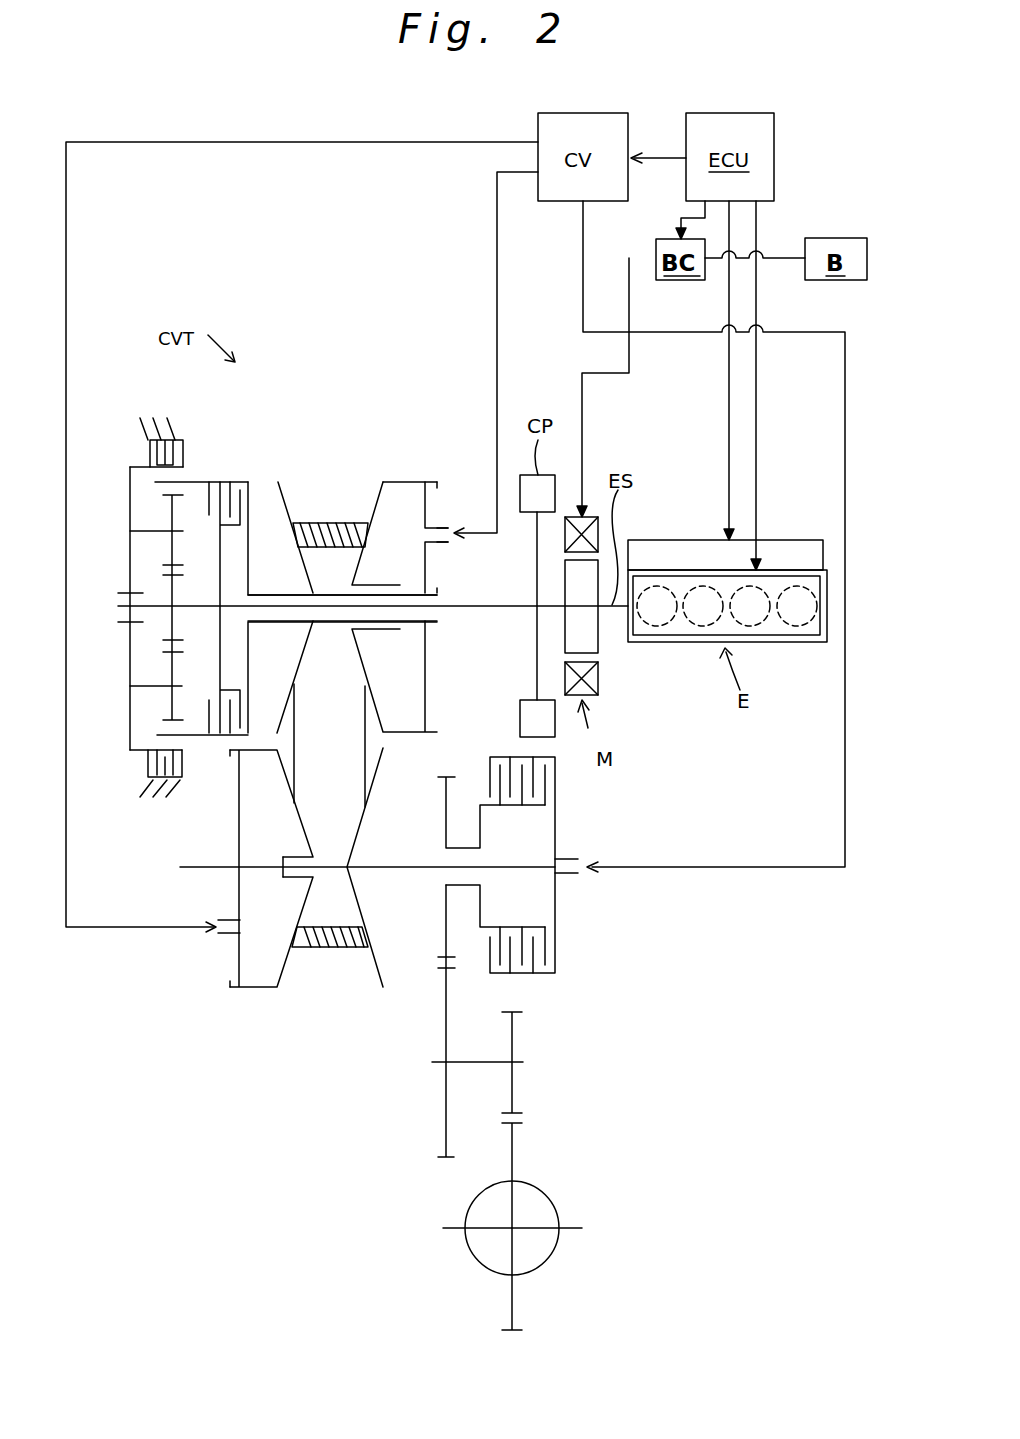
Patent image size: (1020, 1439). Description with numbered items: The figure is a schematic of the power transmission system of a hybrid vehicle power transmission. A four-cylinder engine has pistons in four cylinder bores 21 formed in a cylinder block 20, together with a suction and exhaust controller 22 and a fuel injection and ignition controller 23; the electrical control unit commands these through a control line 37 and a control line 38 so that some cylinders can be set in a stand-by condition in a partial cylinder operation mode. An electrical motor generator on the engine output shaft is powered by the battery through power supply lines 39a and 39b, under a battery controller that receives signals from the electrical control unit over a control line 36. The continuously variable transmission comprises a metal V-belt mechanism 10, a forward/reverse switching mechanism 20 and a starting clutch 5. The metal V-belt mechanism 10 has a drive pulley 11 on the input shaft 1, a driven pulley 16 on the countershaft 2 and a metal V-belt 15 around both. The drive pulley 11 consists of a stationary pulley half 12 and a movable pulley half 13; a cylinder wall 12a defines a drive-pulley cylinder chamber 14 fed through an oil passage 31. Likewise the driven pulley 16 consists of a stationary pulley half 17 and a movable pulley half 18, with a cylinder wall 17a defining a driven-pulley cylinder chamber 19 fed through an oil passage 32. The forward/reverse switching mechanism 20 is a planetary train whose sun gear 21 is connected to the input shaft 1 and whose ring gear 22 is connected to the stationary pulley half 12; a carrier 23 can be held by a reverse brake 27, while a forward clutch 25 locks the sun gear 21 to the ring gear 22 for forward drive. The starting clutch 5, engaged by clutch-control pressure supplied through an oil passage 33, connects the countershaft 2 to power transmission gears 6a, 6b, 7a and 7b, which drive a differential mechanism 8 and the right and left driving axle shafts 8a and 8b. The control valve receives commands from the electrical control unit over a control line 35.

The input shaft 1 is at (493, 612).
The countershaft 2 is at (410, 870).
The starting clutch 5 is at (568, 950).
The power transmission gear 6a is at (446, 812).
The power transmission gear 6b is at (446, 1157).
The power transmission gear 7a is at (512, 1037).
The power transmission gear 7b is at (512, 1153).
The differential mechanism 8 is at (473, 1258).
The driving axle shaft 8a is at (450, 1228).
The driving axle shaft 8b is at (570, 1223).
The metal V-belt mechanism 10 is at (385, 424).
The drive pulley 11 is at (409, 477).
The stationary pulley half 12 is at (293, 494).
The cylinder wall 12a is at (425, 566).
The movable pulley half 13 is at (377, 492).
The drive-pulley cylinder chamber 14 is at (403, 548).
The metal V-belt 15 is at (367, 733).
The driven pulley 16 is at (292, 990).
The stationary pulley half 17 is at (383, 970).
The cylinder wall 17a is at (240, 830).
The movable pulley half 18 is at (283, 967).
The driven-pulley cylinder chamber 19 is at (285, 851).
The forward/reverse switching mechanism 20 is at (129, 407).
The sun gear 21 is at (172, 595).
The ring gear 22 is at (157, 733).
The carrier 23 is at (130, 503).
The forward clutch 25 is at (230, 482).
The reverse brake 27 is at (150, 452).
The oil passage 31 is at (498, 262).
The oil passage 32 is at (301, 142).
The oil passage 33 is at (805, 332).
The control line 35 is at (652, 152).
The control line 36 is at (689, 210).
The control line 37 is at (758, 452).
The control line 38 is at (730, 410).
The power supply line 39a is at (784, 253).
The power supply line 39b is at (630, 308).